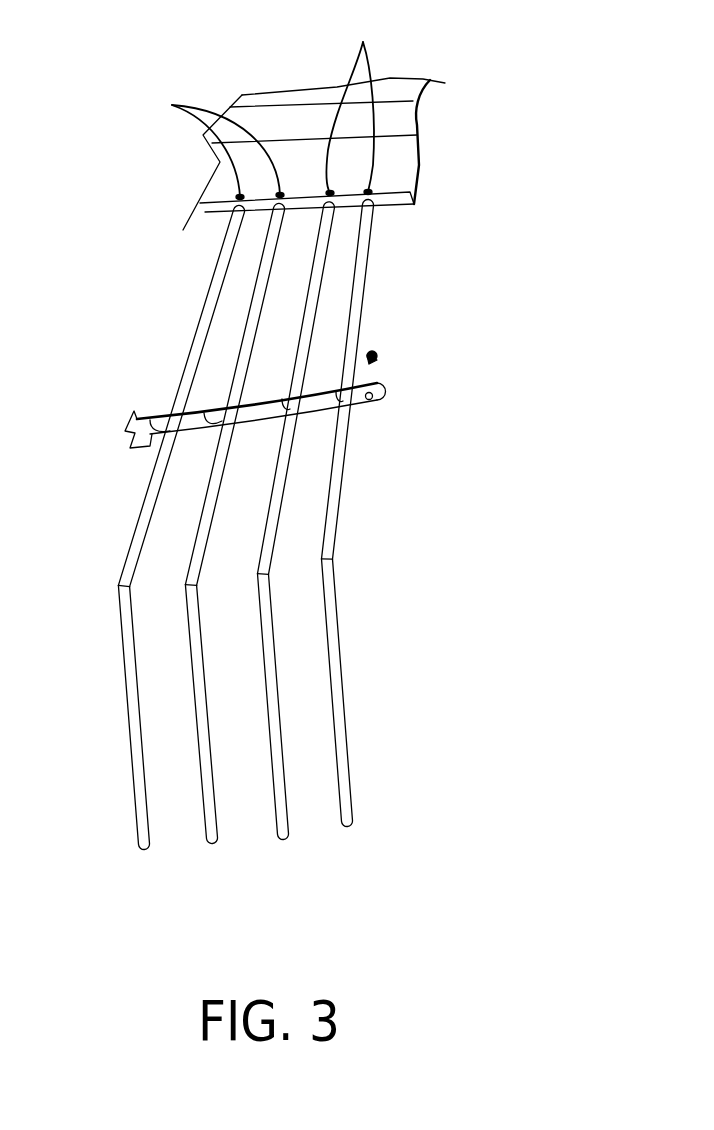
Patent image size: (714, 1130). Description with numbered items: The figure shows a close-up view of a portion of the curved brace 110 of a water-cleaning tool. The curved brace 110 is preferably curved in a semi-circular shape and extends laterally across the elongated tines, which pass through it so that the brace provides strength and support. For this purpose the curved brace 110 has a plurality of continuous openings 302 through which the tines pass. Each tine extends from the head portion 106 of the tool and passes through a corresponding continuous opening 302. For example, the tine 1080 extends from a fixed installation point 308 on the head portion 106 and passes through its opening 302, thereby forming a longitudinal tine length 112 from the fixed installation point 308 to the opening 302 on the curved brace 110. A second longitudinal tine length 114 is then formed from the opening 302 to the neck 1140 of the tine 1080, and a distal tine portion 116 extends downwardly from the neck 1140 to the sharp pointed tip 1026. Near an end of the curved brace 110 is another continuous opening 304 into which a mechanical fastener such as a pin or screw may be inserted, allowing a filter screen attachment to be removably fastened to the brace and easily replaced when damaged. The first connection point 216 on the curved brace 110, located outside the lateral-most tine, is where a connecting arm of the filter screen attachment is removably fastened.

The head portion 106 is at (402, 110).
The fixed installation point 308 is at (255, 107).
The longitudinal tine length 112 is at (326, 392).
The tine 1080 is at (340, 330).
The second longitudinal tine length 114 is at (289, 593).
The neck 1140 is at (258, 573).
The distal tine portion 116 is at (279, 756).
The sharp pointed tip 1026 is at (214, 842).
The curved brace 110 is at (292, 408).
The continuous openings 302 is at (150, 415).
The continuous opening 304 is at (375, 398).
The first connection point 216 is at (376, 357).